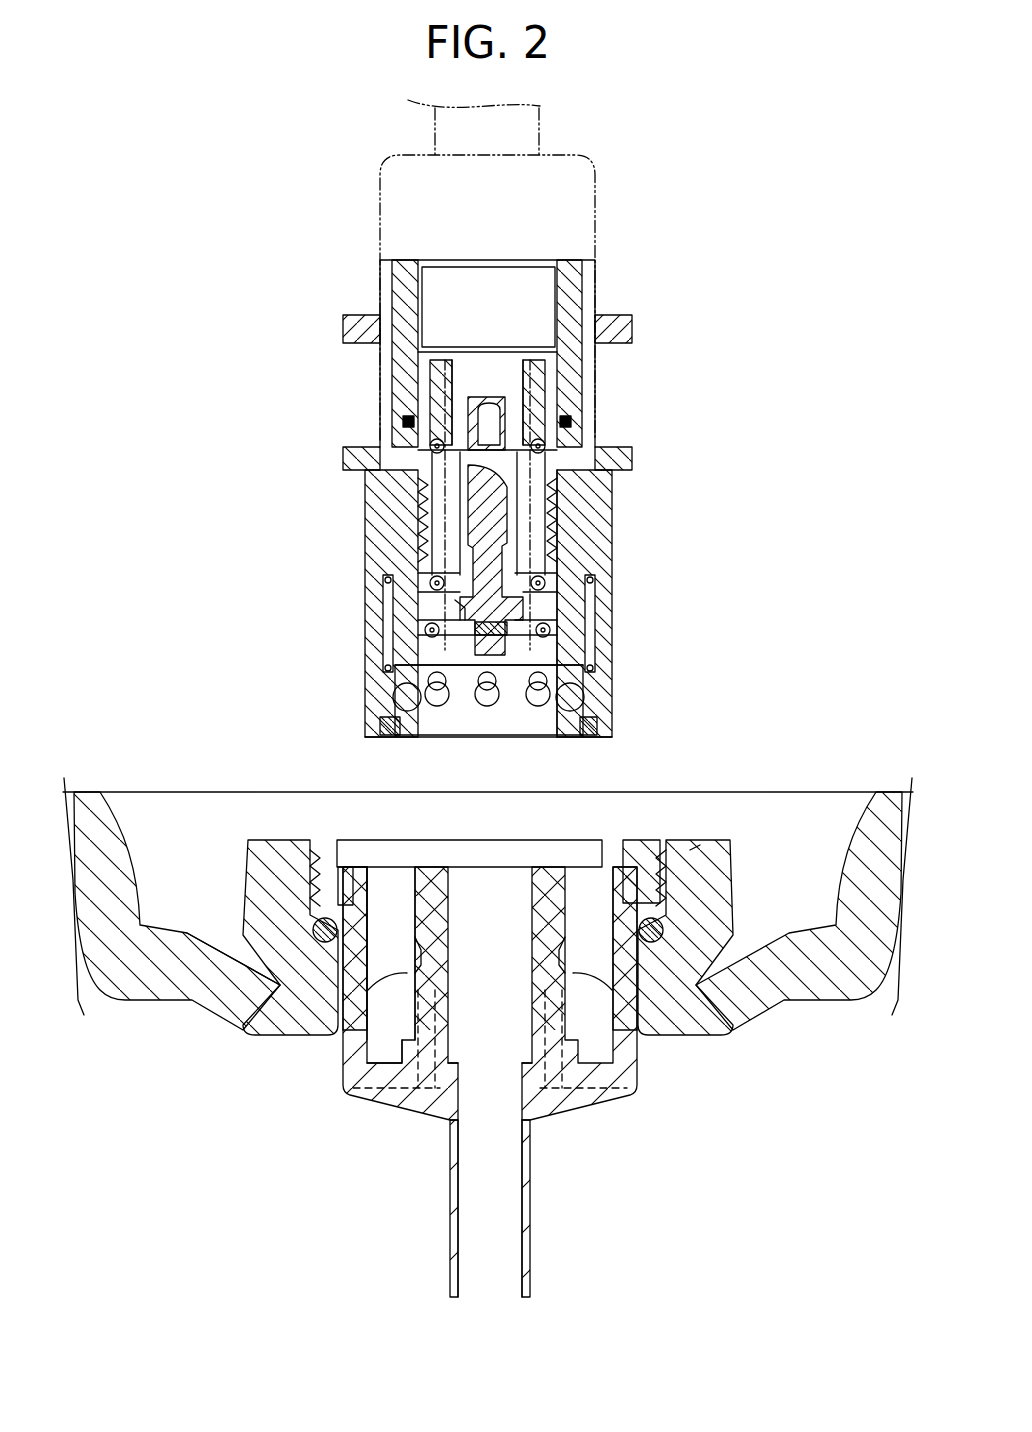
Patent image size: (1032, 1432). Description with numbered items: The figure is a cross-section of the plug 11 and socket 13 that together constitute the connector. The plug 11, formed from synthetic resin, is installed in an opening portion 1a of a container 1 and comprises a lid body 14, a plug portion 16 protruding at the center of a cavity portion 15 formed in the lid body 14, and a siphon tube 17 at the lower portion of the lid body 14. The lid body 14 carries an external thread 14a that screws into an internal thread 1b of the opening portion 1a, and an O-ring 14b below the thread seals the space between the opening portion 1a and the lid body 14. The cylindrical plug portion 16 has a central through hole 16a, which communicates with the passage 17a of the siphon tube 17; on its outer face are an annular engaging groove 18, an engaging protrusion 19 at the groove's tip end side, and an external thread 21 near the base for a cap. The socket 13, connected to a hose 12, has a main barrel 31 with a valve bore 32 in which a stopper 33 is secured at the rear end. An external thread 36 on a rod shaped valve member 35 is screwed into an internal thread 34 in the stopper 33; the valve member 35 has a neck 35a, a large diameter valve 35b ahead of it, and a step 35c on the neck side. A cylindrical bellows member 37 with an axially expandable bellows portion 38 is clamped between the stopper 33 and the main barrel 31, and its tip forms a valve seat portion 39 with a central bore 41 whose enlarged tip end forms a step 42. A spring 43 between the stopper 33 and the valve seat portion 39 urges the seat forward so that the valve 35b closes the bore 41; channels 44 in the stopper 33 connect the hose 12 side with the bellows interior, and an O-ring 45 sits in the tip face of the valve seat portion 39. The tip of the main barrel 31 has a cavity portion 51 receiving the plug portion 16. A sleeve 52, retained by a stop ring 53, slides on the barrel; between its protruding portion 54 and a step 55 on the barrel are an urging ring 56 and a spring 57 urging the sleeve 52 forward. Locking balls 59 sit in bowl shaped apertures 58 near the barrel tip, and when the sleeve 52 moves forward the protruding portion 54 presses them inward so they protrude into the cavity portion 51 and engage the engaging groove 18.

The container 1 is at (891, 792).
The opening portion 1a is at (700, 850).
The internal thread 1b is at (300, 858).
The plug 11 is at (705, 767).
The hose 12 is at (540, 133).
The socket 13 is at (670, 331).
The lid body 14 is at (350, 1080).
The external thread 14a is at (322, 925).
The O-ring 14b is at (275, 990).
The cavity portion 15 is at (603, 1047).
The plug portion 16 is at (555, 885).
The through hole 16a is at (450, 1050).
The siphon tube 17 is at (532, 1258).
The passage 17a is at (458, 1222).
The engaging groove 18 is at (385, 1040).
The engaging protrusion 19 is at (415, 968).
The external thread 21 is at (397, 1043).
The main barrel 31 is at (590, 412).
The valve bore 32 is at (522, 480).
The stopper 33 is at (436, 373).
The internal thread 34 is at (497, 405).
The valve member 35 is at (487, 495).
The neck 35a is at (548, 518).
The valve 35b is at (553, 558).
The step 35c is at (470, 612).
The external thread 36 is at (478, 432).
The bellows member 37 is at (440, 590).
The bellows portion 38 is at (437, 535).
The valve seat portion 39 is at (440, 648).
The bore 41 is at (430, 641).
The step 42 is at (495, 668).
The spring 43 is at (440, 492).
The channels 44 is at (515, 403).
The O-ring 45 is at (548, 636).
The cavity portion 51 is at (538, 725).
The sleeve 52 is at (612, 486).
The stop ring 53 is at (600, 730).
The protruding portion 54 is at (600, 708).
The step 55 is at (590, 580).
The urging ring 56 is at (600, 672).
The spring 57 is at (597, 601).
The apertures 58 is at (400, 700).
The locking balls 59 is at (402, 722).